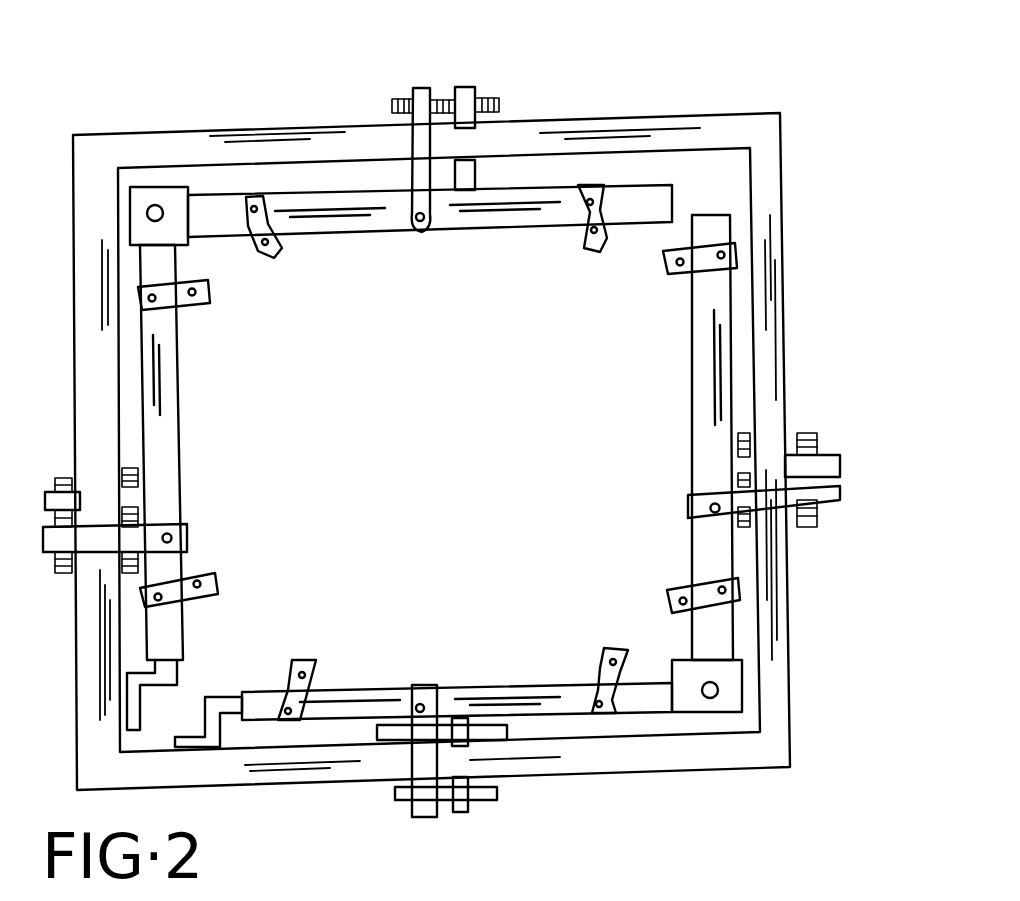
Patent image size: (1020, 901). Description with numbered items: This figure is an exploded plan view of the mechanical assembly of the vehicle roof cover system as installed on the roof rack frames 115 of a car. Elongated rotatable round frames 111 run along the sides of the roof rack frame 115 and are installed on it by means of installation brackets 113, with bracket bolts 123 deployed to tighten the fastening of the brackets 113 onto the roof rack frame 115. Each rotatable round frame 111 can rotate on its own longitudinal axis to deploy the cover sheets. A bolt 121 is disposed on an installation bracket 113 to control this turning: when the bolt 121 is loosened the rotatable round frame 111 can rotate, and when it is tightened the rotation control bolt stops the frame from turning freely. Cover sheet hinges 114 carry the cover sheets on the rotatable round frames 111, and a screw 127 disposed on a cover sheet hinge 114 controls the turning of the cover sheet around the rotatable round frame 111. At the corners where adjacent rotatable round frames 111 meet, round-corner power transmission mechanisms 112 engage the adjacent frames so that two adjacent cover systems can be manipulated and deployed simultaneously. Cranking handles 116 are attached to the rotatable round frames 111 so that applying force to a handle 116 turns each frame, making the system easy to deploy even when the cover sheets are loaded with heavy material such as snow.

The rotatable round frame 111 is at (390, 203).
The round-corner power transmission mechanism 112 is at (152, 203).
The installation bracket 113 is at (430, 822).
The cover sheet hinge 114 is at (589, 192).
The roof rack frame 115 is at (763, 197).
The cranking handle 116 is at (213, 748).
The bolt 121 is at (723, 520).
The bracket bolt 123 is at (813, 527).
The screw 127 is at (598, 707).